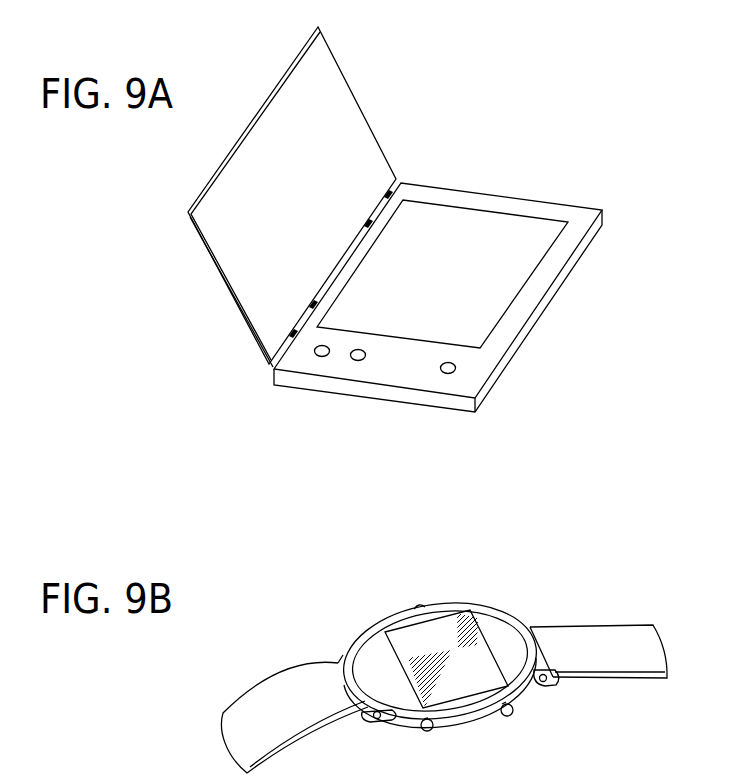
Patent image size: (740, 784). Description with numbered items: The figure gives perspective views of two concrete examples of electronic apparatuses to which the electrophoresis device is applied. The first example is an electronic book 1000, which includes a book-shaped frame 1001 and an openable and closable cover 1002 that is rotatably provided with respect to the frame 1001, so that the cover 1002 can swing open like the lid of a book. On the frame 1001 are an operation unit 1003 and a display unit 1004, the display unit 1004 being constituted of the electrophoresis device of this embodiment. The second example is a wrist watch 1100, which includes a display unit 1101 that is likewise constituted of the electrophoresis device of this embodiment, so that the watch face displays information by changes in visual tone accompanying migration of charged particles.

In FIG. 9A, the electronic book 1000 is at (527, 112).
In FIG. 9A, the book-shaped frame 1001 is at (557, 210).
In FIG. 9A, the cover 1002 is at (338, 95).
In FIG. 9A, the operation unit 1003 is at (455, 365).
In FIG. 9A, the display unit 1004 is at (518, 272).
In FIG. 9B, the wrist watch 1100 is at (453, 592).
In FIG. 9B, the display unit 1101 is at (485, 667).